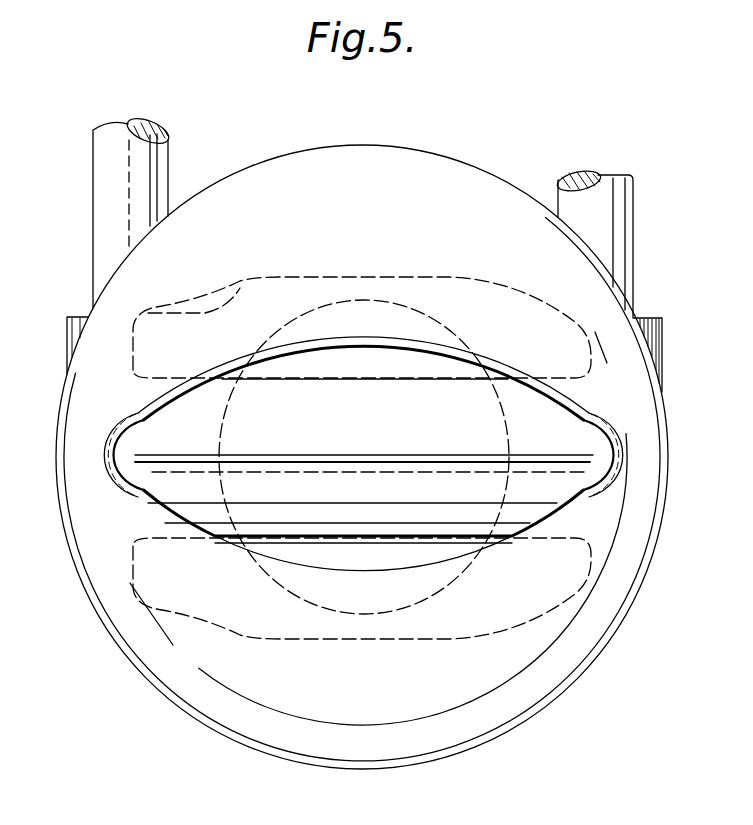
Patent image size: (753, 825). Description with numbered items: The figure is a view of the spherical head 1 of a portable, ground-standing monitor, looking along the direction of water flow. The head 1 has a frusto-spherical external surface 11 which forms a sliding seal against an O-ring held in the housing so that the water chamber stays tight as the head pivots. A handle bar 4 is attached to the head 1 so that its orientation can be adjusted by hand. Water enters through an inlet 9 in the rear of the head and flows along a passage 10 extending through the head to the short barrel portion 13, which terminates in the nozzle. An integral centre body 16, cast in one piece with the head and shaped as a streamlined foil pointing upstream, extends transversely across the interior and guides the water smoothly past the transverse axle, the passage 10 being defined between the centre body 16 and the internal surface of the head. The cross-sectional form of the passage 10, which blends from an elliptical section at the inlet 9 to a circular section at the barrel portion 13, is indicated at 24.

The head 1 is at (480, 163).
The handle bar 4 is at (102, 198).
The inlet 9 is at (408, 552).
The passage 10 is at (355, 358).
The frusto-spherical external surface 11 is at (270, 172).
The barrel portion 13 is at (240, 554).
The centre body 16 is at (233, 492).
The cross-sectional form of the passage 24 is at (150, 314).